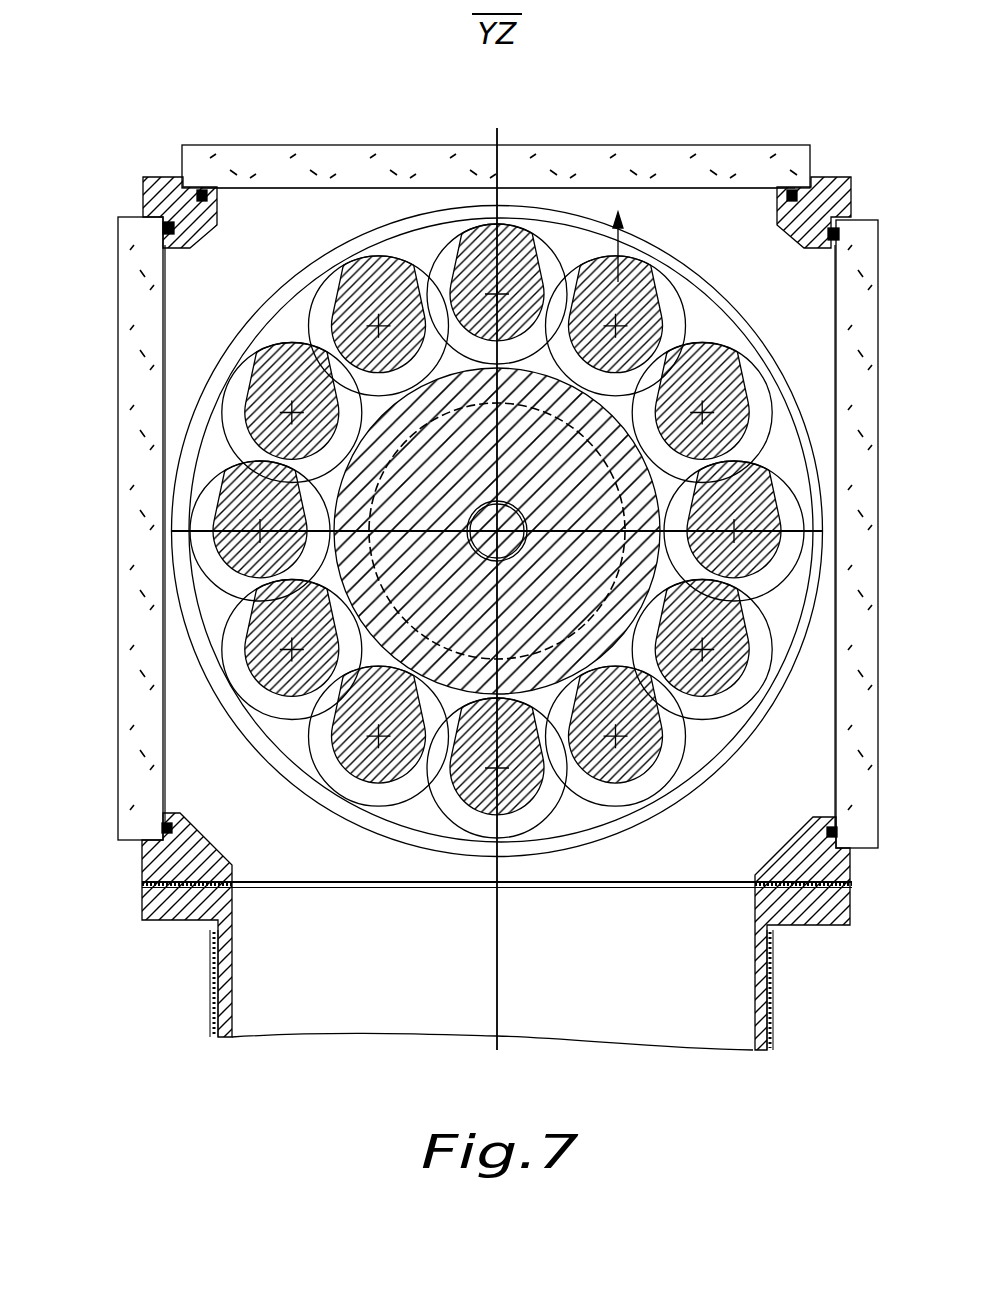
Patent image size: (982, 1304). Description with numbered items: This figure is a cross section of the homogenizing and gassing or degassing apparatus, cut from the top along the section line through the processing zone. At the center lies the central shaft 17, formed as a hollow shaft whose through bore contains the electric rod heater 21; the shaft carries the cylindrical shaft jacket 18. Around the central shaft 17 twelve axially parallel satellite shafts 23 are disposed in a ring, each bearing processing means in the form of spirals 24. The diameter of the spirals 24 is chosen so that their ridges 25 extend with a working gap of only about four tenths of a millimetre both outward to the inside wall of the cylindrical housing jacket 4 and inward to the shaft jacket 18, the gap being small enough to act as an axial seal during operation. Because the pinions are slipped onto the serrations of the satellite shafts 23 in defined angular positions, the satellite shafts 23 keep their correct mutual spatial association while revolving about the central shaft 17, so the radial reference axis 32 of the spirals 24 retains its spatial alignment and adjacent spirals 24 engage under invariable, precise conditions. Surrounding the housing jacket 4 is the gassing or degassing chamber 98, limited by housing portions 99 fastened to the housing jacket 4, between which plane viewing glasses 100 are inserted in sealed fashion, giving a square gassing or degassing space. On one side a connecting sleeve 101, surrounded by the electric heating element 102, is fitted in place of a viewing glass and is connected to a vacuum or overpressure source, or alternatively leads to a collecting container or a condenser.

The cylindrical housing jacket 4 is at (612, 814).
The central shaft 17 is at (462, 612).
The cylindrical shaft jacket 18 is at (606, 660).
The electric rod heater 21 is at (512, 508).
The satellite shafts 23 is at (692, 292).
The spirals 24 is at (756, 402).
The ridges 25 is at (582, 800).
The radial reference axis of spirals 32 is at (623, 215).
The gassing or degassing chamber 98 is at (242, 287).
The housing portions 99 is at (830, 200).
The plane viewing glasses 100 is at (538, 155).
The connecting sleeve 101 is at (232, 966).
The electric heating element 102 is at (774, 1006).